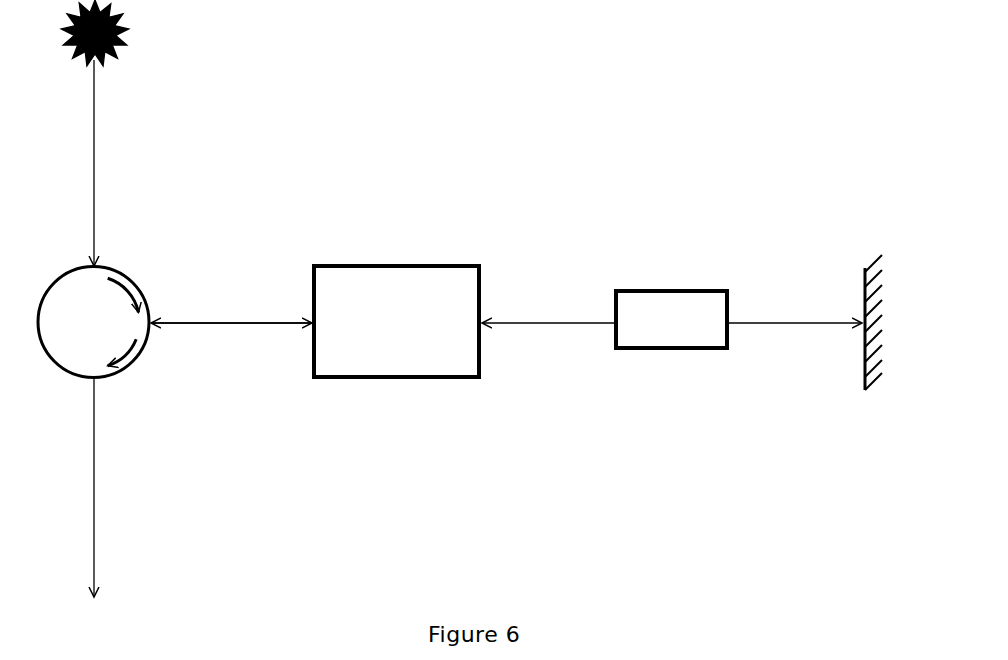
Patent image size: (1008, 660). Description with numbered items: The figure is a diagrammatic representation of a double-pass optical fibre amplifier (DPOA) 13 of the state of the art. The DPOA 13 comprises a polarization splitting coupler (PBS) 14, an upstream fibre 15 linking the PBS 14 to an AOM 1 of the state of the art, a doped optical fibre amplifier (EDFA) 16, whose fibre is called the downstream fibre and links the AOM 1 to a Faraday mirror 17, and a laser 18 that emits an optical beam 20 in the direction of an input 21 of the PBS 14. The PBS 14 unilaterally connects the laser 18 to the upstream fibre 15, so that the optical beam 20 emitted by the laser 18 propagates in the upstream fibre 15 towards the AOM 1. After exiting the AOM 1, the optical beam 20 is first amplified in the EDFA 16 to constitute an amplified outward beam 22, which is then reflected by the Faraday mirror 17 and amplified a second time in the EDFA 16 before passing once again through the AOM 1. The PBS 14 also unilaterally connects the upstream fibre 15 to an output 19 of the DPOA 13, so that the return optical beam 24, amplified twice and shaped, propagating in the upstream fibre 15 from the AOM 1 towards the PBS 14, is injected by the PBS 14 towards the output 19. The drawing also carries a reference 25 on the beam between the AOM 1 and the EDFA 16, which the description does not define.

The AOM 1 is at (400, 378).
The double-pass optical fibre amplifier 13 is at (678, 101).
The polarization splitting coupler 14 is at (87, 328).
The upstream fibre 15 is at (224, 322).
The doped optical fibre amplifier 16 is at (673, 290).
The Faraday mirror 17 is at (860, 292).
The laser 18 is at (112, 50).
The output 19 is at (96, 378).
The optical beam 20 is at (95, 146).
The input 21 is at (100, 265).
The amplified outward beam 22 is at (795, 325).
The return optical beam 24 is at (172, 326).
The reflected beam 25 is at (548, 325).